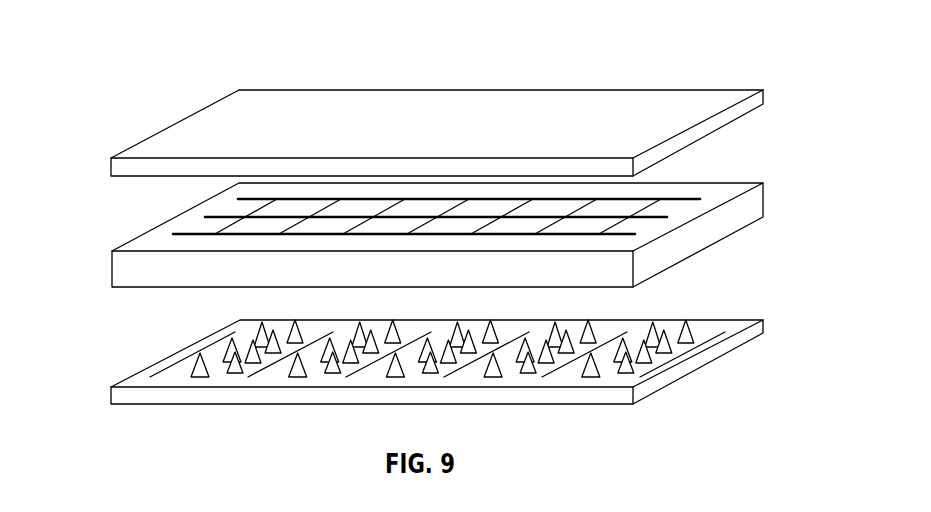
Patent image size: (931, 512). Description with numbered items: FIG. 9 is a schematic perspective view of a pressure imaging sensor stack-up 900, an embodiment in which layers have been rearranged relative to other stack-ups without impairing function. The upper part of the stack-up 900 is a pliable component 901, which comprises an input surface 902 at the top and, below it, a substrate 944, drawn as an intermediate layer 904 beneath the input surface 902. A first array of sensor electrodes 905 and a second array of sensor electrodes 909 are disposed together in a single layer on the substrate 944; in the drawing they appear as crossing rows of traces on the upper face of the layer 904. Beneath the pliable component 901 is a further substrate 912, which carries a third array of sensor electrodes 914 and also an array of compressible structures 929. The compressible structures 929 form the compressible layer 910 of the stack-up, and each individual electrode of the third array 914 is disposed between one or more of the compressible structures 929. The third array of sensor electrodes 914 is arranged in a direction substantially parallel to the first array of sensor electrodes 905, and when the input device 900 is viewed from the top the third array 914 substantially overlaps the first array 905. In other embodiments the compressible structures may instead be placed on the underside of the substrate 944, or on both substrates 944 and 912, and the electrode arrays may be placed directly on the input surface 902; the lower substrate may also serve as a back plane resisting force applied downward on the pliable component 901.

The stack-up 900 is at (187, 45).
The pliable component 901 is at (88, 93).
The input surface 902 is at (765, 97).
The substrate layer 904 is at (765, 200).
The first array of sensor electrodes 905 is at (633, 208).
The second array of sensor electrodes 909 is at (665, 202).
The compressible layer 910 is at (88, 292).
The substrate 912 is at (766, 327).
The third array of sensor electrodes 914 is at (707, 342).
The compressible structures 929 is at (673, 312).
The substrate 944 is at (755, 222).